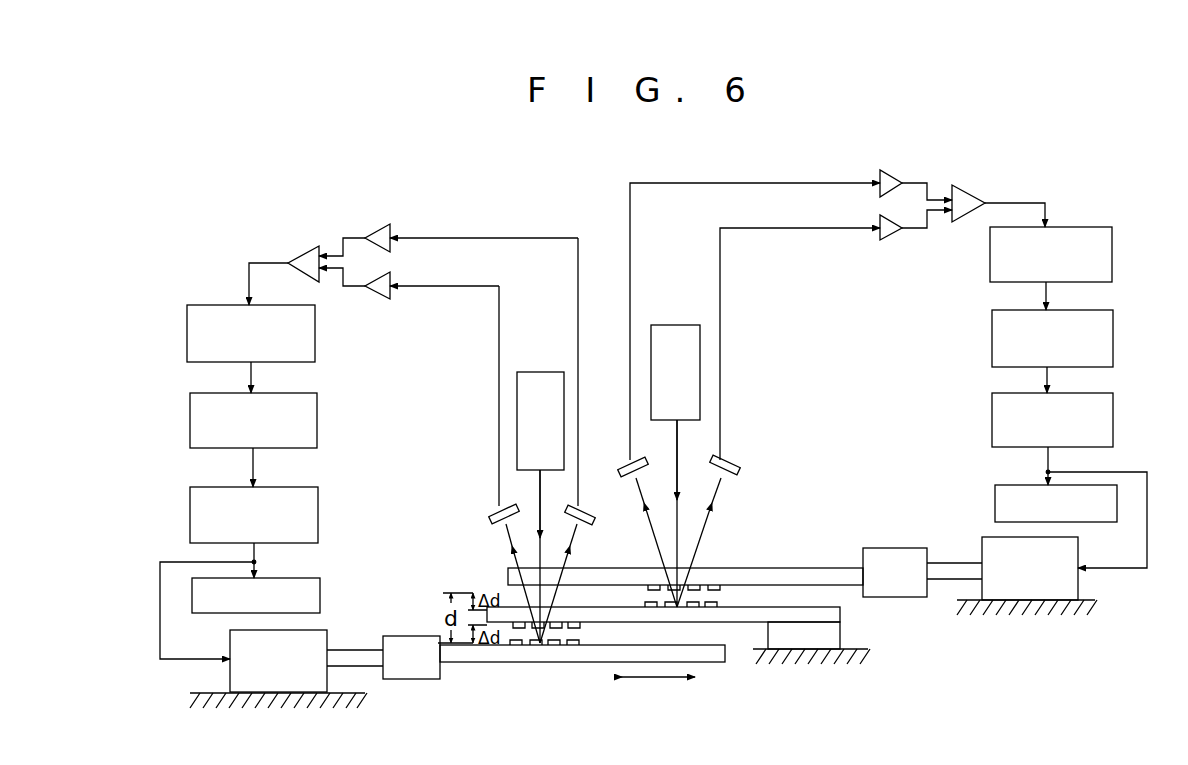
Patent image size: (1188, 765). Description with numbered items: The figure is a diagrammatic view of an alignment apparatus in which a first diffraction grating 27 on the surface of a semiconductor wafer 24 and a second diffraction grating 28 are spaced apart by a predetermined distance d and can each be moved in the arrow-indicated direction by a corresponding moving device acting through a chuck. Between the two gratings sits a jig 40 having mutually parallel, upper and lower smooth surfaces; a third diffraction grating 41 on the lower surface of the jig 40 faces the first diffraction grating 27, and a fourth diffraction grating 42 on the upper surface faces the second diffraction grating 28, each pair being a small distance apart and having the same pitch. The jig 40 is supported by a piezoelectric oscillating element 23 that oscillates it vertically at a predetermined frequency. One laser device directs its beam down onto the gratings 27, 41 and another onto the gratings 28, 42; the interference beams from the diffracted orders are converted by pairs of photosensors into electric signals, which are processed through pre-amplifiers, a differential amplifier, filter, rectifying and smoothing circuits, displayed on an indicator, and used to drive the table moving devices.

The piezoelectric oscillating element 23 is at (842, 635).
The semiconductor wafer 24 is at (487, 663).
The first diffraction grating 27 is at (585, 646).
The second diffraction grating 28 is at (719, 585).
The jig 40 is at (742, 622).
The third diffraction grating 41 is at (583, 628).
The fourth diffraction grating 42 is at (647, 603).